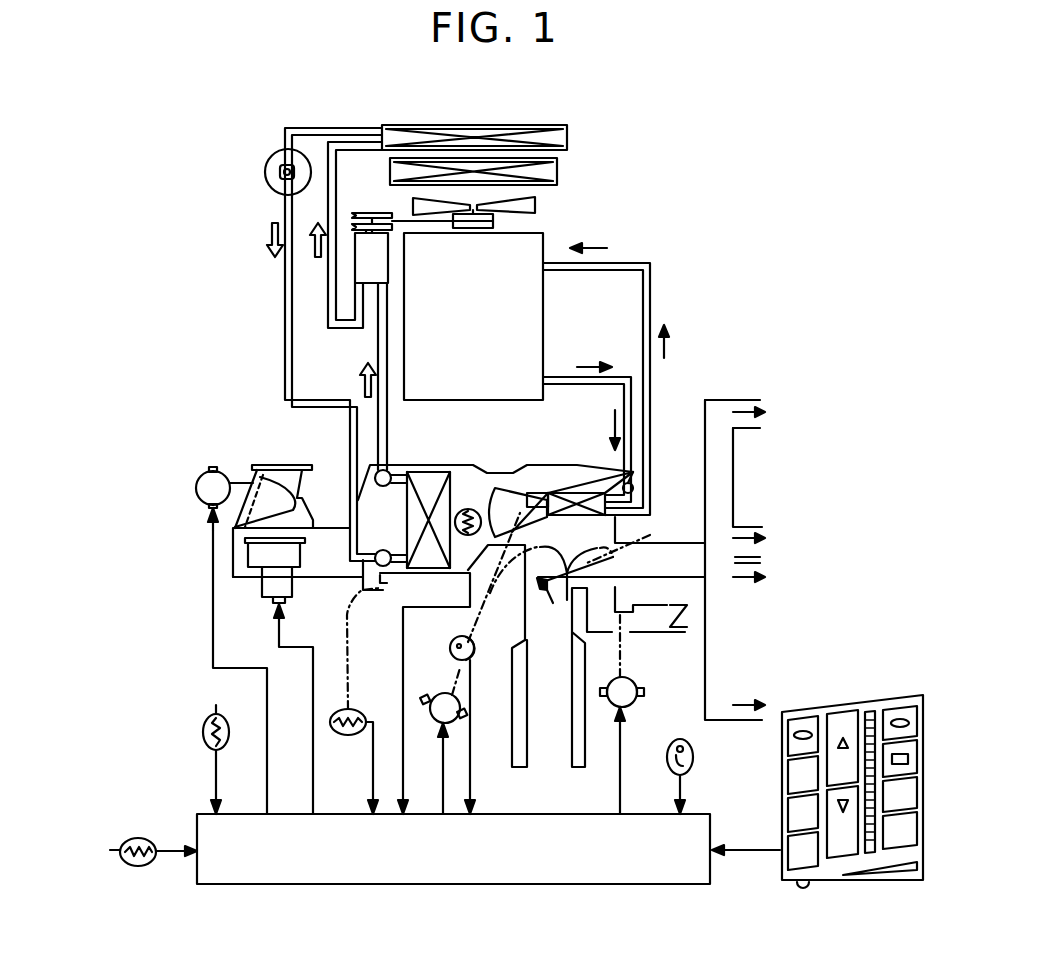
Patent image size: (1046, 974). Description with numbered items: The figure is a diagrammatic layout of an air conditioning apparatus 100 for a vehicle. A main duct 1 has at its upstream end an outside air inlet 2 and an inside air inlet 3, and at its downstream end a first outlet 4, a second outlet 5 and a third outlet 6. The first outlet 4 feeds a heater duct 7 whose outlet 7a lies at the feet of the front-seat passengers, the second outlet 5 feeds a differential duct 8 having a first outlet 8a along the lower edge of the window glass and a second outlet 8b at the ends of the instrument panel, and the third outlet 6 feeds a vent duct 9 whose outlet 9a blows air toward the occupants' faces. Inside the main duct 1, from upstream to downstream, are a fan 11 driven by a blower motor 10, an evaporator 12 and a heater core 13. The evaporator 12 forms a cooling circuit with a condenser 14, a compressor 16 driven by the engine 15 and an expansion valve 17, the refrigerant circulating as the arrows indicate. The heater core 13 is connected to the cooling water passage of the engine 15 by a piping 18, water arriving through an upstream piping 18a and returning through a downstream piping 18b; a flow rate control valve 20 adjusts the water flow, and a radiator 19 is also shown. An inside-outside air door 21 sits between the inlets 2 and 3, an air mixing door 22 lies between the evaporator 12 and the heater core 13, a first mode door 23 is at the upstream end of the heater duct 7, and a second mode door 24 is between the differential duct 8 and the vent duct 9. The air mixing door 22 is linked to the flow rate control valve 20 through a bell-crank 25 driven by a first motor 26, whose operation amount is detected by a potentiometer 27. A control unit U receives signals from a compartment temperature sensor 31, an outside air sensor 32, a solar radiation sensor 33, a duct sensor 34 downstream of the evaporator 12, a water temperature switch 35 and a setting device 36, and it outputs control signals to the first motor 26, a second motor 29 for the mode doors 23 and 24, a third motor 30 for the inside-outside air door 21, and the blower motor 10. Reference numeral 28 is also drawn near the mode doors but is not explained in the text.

The air conditioning apparatus 100 is at (236, 346).
The main duct 1 is at (400, 463).
The outside air inlet 2 is at (262, 470).
The inside air inlet 3 is at (235, 527).
The first outlet 4 is at (576, 559).
The second outlet 5 is at (600, 590).
The third outlet 6 is at (617, 561).
The heater duct 7 is at (527, 650).
The heater duct outlet 7a is at (577, 768).
The differential duct 8 is at (636, 631).
The first outlet of differential duct 8a is at (667, 598).
The second outlet of differential duct 8b is at (685, 628).
The vent duct 9 is at (723, 481).
The vent duct outlet 9a is at (748, 398).
The blower motor 10 is at (263, 600).
The fan 11 is at (253, 558).
The evaporator 12 is at (425, 470).
The heater core 13 is at (588, 492).
The condenser 14 is at (550, 125).
The engine 15 is at (533, 253).
The compressor 16 is at (372, 242).
The expansion valve 17 is at (383, 550).
The piping 18 is at (670, 378).
The upstream piping 18a is at (625, 378).
The downstream piping 18b is at (650, 266).
The radiator 19 is at (557, 171).
The flow rate control valve 20 is at (634, 491).
The inside-outside air door 21 is at (282, 465).
The air mixing door 22 is at (513, 530).
The first mode door 23 is at (502, 577).
The second mode door 24 is at (635, 538).
The bell-crank 25 is at (540, 490).
The first motor 26 is at (437, 694).
The potentiometer 27 is at (451, 642).
The mode door 28 is at (550, 591).
The second motor 29 is at (634, 700).
The third motor 30 is at (198, 483).
The compartment temperature sensor 31 is at (348, 736).
The outside air sensor 32 is at (203, 735).
The solar radiation sensor 33 is at (137, 838).
The duct sensor 34 is at (463, 509).
The water temperature switch 35 is at (695, 757).
The setting device 36 is at (885, 882).
The control unit U is at (383, 870).